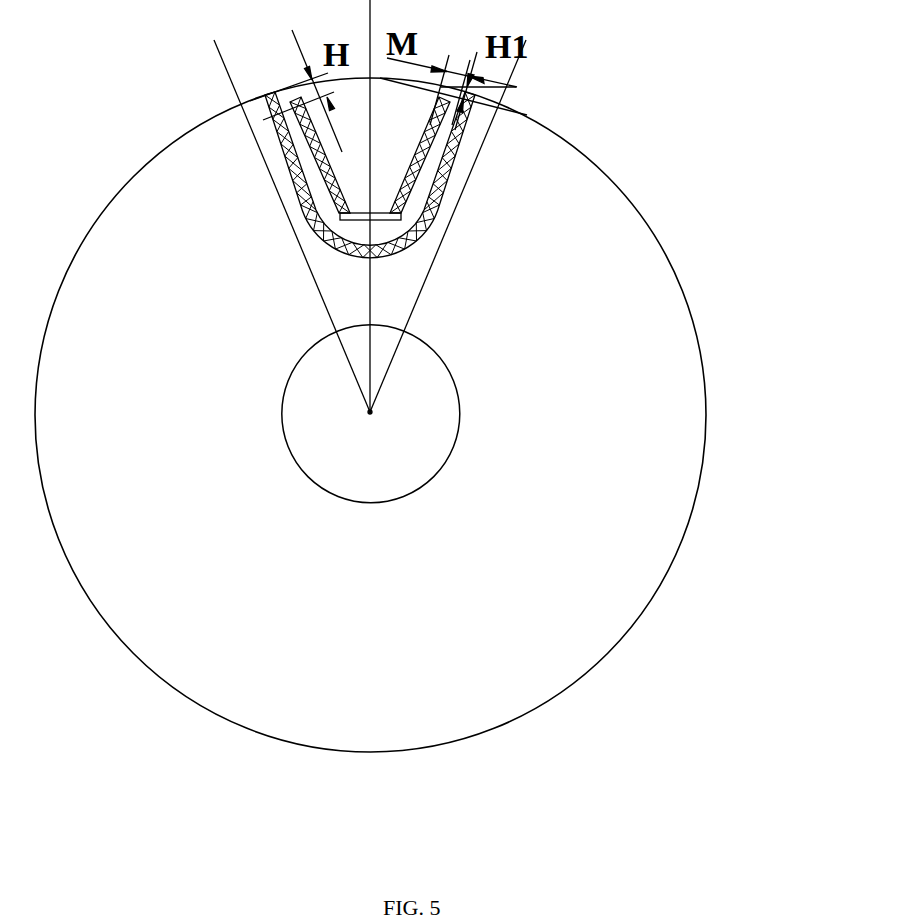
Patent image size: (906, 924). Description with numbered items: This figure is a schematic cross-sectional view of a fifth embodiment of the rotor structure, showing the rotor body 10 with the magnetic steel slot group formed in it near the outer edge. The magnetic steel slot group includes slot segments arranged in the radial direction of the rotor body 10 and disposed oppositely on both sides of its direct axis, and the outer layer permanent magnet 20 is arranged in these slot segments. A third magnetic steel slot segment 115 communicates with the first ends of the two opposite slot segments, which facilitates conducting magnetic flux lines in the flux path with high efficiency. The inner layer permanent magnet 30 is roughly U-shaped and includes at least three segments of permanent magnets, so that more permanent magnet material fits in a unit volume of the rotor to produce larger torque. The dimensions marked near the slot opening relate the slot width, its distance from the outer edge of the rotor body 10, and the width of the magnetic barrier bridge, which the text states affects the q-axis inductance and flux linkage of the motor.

The rotor body 10 is at (617, 313).
The outer layer permanent magnet 20 is at (433, 147).
The inner layer permanent magnet 30 is at (446, 177).
The third magnetic steel slot segment 115 is at (403, 211).